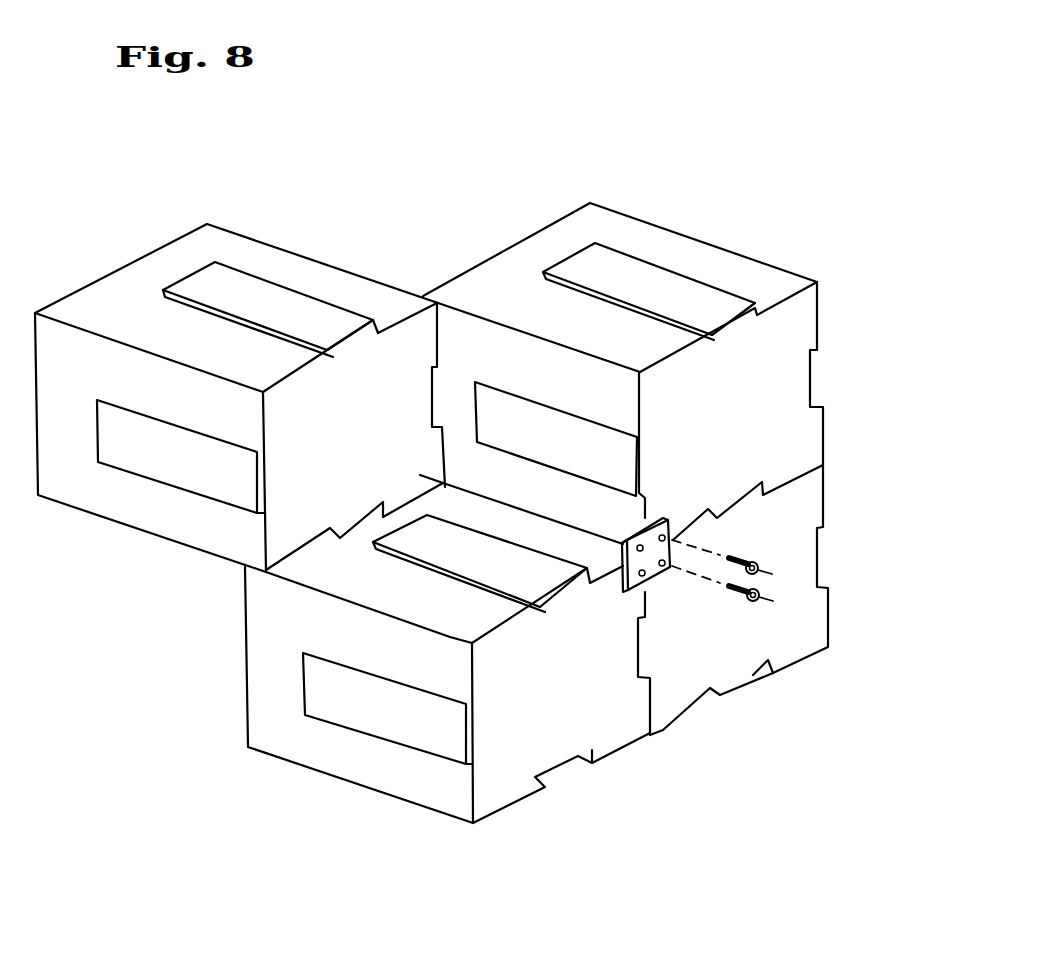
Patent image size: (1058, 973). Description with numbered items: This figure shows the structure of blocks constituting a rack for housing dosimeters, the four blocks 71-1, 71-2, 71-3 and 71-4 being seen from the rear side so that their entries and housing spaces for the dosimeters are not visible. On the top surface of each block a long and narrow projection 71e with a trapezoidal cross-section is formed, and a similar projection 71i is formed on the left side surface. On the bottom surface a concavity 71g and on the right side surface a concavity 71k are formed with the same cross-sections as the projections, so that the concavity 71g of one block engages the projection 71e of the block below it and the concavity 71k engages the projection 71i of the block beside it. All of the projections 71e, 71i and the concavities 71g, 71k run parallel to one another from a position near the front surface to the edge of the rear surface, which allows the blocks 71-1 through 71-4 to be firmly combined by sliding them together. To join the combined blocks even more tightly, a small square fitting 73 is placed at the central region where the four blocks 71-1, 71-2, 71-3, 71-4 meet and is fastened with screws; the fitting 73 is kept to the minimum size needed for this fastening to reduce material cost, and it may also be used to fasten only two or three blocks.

The block 71-1 is at (827, 505).
The block 71-2 is at (428, 808).
The block 71-3 is at (820, 312).
The block 71-4 is at (92, 284).
The projection 71e is at (280, 297).
The concavity 71g is at (357, 513).
The projection 71i is at (575, 440).
The concavity 71k is at (437, 393).
The fitting 73 is at (655, 574).